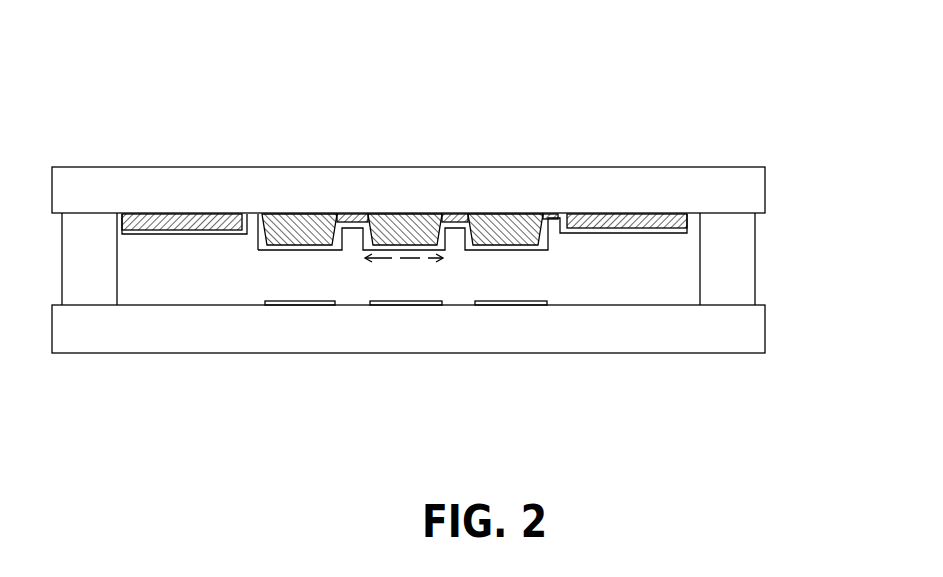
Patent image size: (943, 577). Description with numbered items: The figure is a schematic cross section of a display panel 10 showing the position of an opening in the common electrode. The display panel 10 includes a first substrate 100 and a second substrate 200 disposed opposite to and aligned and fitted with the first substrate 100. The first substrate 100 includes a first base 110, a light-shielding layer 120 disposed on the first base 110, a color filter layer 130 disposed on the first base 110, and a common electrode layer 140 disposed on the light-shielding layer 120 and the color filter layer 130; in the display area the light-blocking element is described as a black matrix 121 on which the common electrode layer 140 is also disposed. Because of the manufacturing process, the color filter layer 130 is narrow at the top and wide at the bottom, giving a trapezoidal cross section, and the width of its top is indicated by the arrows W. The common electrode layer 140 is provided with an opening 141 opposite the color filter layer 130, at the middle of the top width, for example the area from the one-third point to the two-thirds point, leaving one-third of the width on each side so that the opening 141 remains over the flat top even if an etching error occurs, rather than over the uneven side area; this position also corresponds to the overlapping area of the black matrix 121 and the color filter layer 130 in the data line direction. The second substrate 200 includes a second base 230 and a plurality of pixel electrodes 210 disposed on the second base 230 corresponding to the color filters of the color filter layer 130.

The display panel 10 is at (693, 137).
The first substrate 100 is at (432, 93).
The first base 110 is at (266, 206).
The light-shielding layer 120 is at (147, 213).
The black matrix 121 is at (468, 218).
The color filter layer 130 is at (414, 213).
The common electrode layer 140 is at (208, 233).
The opening 141 is at (293, 248).
The second substrate 200 is at (408, 377).
The pixel electrodes 210 is at (437, 410).
The second base 230 is at (375, 353).